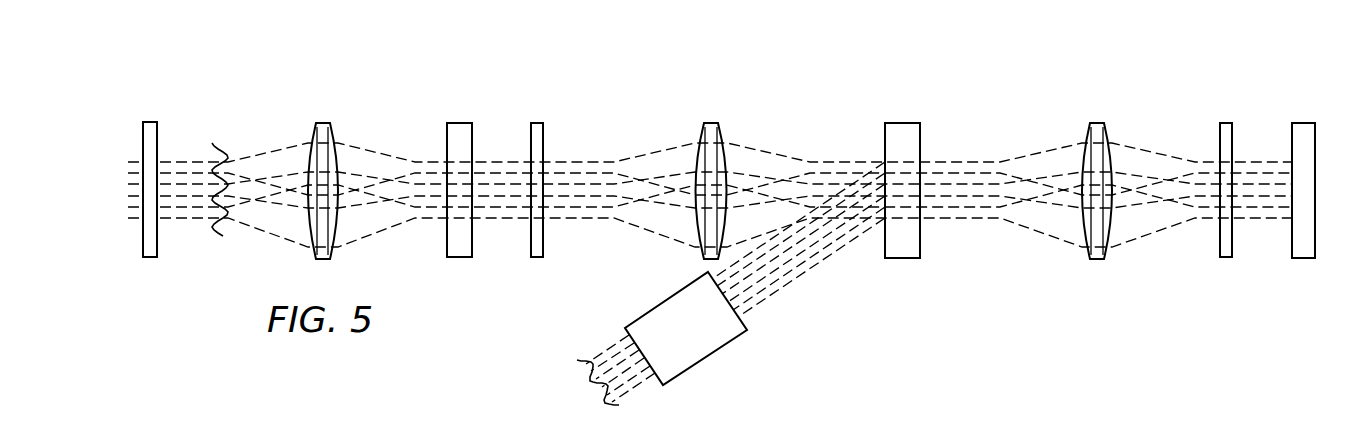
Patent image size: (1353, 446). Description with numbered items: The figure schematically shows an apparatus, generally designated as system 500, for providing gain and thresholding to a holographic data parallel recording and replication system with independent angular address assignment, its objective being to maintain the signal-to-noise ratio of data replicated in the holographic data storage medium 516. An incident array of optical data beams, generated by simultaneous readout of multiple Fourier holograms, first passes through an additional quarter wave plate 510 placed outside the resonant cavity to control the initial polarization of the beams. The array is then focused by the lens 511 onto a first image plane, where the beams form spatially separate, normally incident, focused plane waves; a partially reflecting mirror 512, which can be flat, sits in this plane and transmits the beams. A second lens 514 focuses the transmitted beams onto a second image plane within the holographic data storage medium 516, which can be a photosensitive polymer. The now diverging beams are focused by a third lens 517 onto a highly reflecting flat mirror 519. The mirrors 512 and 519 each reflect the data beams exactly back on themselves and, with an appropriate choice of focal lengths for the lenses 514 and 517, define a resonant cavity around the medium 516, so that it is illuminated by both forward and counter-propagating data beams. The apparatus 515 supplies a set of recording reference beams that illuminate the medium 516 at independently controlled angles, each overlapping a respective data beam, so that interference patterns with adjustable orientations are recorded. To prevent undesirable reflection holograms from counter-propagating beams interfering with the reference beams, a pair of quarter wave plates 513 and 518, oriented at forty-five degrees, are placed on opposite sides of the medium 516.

The system 500 is at (917, 355).
The quarter wave plate 510 is at (150, 122).
The lens 511 is at (323, 122).
The partially reflecting mirror 512 is at (460, 123).
The quarter wave plate 513 is at (538, 123).
The second lens 514 is at (712, 123).
The apparatus 515 is at (705, 358).
The holographic data storage medium 516 is at (905, 123).
The third lens 517 is at (1097, 123).
The quarter wave plate 518 is at (1228, 123).
The highly reflecting flat mirror 519 is at (1305, 123).